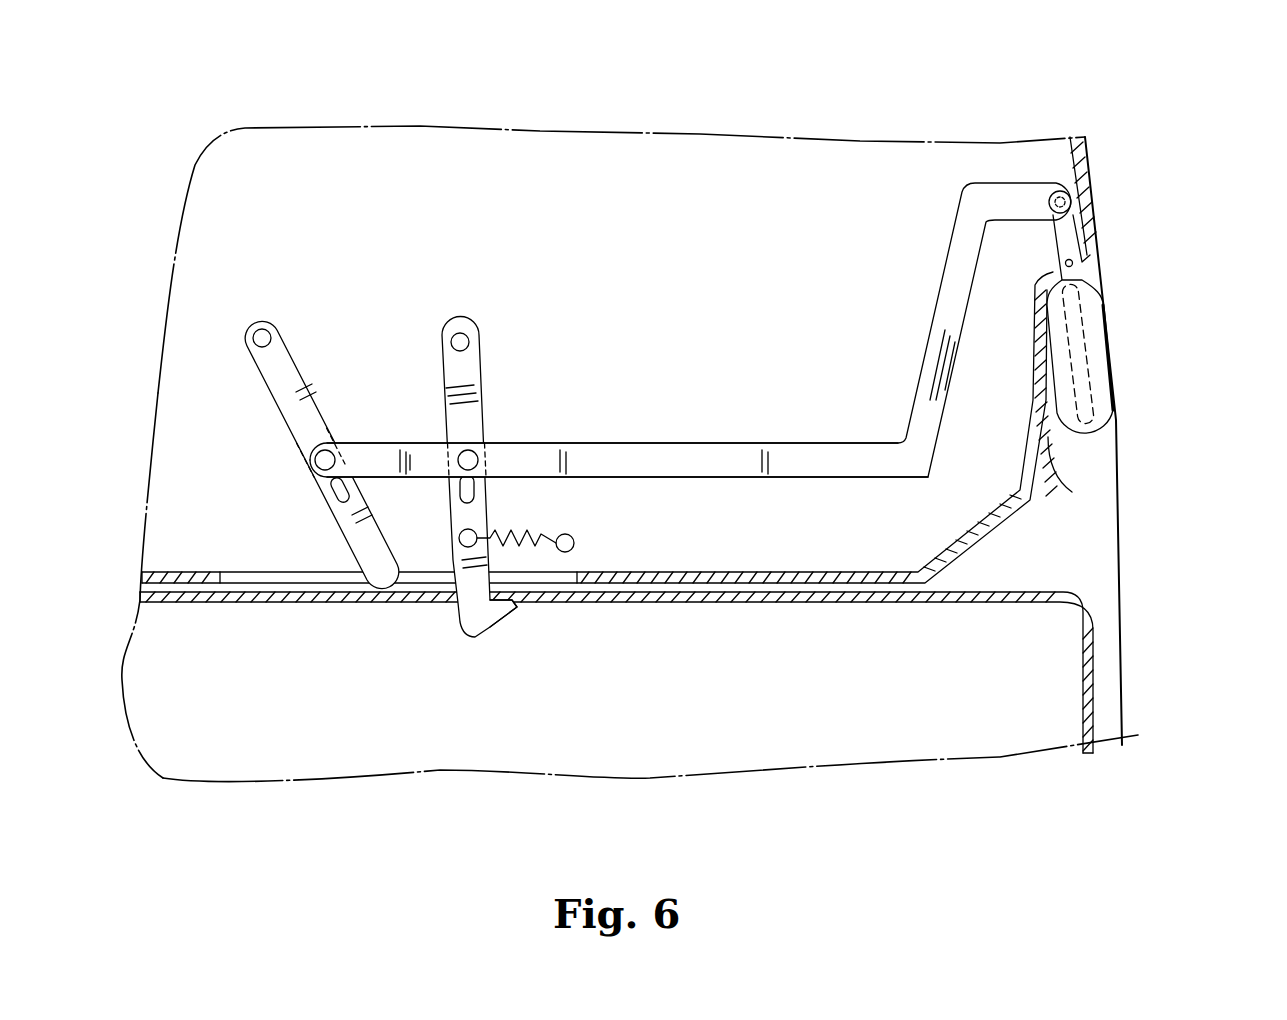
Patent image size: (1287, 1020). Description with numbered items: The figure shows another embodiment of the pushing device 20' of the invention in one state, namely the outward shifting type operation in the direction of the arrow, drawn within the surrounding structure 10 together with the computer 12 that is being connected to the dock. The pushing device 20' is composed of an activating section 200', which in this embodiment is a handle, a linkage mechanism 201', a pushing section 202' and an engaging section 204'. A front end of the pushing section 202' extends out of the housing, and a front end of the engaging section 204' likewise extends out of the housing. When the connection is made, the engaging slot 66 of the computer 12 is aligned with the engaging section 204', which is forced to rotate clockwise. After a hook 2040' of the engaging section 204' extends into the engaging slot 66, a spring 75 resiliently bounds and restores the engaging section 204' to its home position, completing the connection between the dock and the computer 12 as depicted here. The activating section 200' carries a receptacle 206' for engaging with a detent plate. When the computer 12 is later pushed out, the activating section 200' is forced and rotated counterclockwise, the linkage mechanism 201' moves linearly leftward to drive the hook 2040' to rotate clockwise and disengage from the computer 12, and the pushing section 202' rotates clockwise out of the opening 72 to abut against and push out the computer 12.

The door / housing frame 10 is at (508, 158).
The computer 12 is at (483, 740).
The pushing device 20' is at (613, 401).
The linkage mechanism 201' is at (690, 330).
The pushing section 202' is at (301, 454).
The engaging section 204' is at (468, 523).
The hook 2040' is at (530, 662).
The receptacle 206' is at (1139, 266).
The activating section 200' is at (1154, 386).
The opening 72 is at (265, 577).
The engaging slot 66 is at (413, 597).
The spring 75 is at (540, 530).